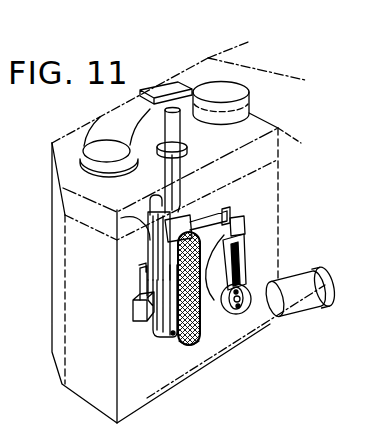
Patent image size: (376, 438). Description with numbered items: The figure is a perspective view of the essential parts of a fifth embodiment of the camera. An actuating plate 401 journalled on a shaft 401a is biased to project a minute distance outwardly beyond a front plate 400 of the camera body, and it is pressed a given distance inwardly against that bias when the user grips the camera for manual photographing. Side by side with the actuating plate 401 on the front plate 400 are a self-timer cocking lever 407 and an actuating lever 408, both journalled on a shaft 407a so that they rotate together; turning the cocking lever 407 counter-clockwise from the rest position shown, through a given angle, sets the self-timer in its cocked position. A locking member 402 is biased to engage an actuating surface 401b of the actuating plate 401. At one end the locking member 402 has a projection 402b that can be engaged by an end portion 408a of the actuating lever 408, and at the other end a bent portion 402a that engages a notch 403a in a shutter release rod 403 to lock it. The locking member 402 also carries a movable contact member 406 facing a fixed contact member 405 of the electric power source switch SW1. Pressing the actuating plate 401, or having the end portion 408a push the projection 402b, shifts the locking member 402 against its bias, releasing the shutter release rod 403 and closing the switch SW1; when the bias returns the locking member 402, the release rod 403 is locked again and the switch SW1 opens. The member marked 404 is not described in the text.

The front plate 400 is at (200, 355).
The actuating plate 401 is at (178, 342).
The shaft 401a is at (163, 343).
The actuating surface 401b is at (141, 218).
The locking member 402 is at (147, 244).
The bent portion 402a is at (121, 218).
The projection 402b is at (214, 218).
The shutter release rod 403 is at (188, 131).
The notch 403a is at (181, 176).
The contact plate 404 is at (173, 323).
The fixed contact member 405 is at (139, 286).
The movable contact member 406 is at (133, 304).
The self-timer cocking lever 407 is at (236, 305).
The shaft 407a is at (237, 299).
The actuating lever 408 is at (241, 264).
The end portion 408a is at (245, 230).
The electric power source switch SW1 is at (110, 301).